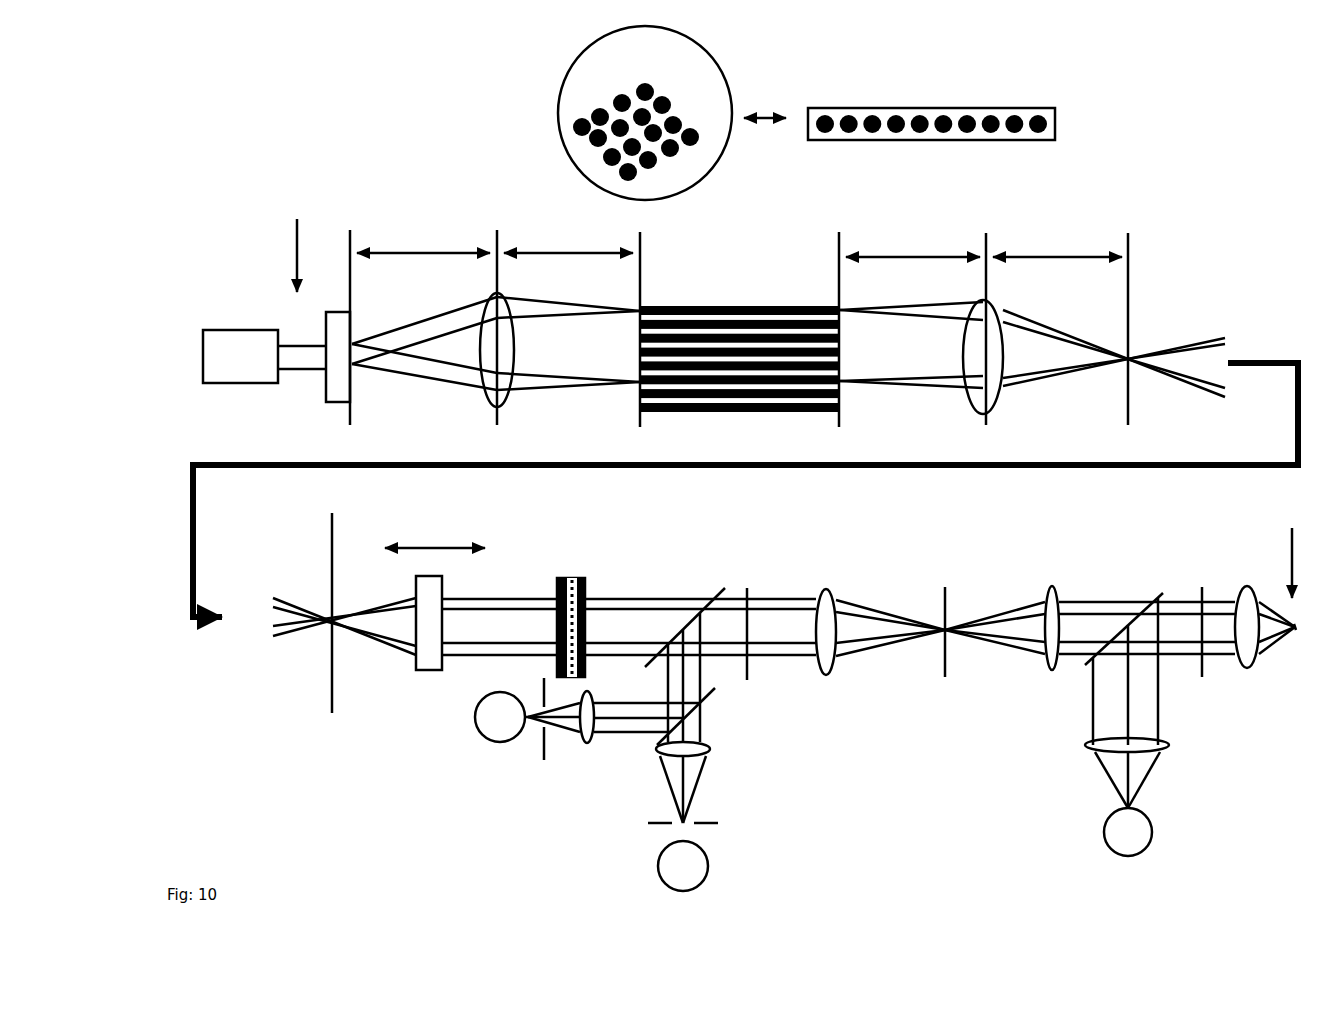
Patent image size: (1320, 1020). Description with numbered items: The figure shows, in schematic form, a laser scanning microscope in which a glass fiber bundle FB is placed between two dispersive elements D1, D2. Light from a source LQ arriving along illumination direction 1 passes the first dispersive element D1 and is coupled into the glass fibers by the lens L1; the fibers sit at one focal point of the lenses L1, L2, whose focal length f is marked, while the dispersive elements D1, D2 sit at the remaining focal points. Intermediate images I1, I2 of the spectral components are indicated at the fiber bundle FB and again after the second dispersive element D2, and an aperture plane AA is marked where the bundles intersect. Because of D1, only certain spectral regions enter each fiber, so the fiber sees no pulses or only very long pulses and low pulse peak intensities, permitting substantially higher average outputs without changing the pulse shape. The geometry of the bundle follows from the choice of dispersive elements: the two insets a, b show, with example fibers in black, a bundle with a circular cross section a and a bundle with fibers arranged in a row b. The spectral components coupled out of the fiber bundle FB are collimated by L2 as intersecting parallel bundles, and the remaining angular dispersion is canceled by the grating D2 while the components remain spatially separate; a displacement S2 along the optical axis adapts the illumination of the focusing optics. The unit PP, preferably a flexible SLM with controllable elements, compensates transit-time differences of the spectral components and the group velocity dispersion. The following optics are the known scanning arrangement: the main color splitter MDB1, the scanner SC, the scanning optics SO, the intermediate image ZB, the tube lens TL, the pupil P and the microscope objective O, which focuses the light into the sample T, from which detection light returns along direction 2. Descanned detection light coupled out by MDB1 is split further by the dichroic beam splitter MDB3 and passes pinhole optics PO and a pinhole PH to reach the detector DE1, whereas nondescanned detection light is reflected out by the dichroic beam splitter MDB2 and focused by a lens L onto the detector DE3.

The fiber bundle with circular cross section a is at (635, 113).
The fiber bundle with fibers arranged in a row b is at (931, 108).
The illumination light direction 1 is at (297, 237).
The detection light direction 2 is at (1294, 544).
The light source LQ is at (264, 376).
The dispersive element D1 is at (328, 336).
The focal length f is at (739, 241).
The lens L1 is at (506, 336).
The lens L2 is at (1000, 342).
The first intermediate image I1 is at (629, 491).
The second intermediate image I2 is at (629, 486).
The glass fiber bundle FB is at (648, 192).
The aperture / intermediate image plane AA is at (749, 473).
The displacement S2 is at (435, 533).
The dispersive element D2 is at (419, 643).
The compensation unit PP is at (571, 614).
The first dichroic beam splitter MDB1 is at (685, 611).
The dichroic beam splitter MDB2 is at (1124, 650).
The dichroic beam splitter MDB3 is at (687, 679).
The scanner SC is at (756, 616).
The scanning optics SO is at (876, 655).
The intermediate image ZB is at (986, 652).
The tube lens TL is at (1139, 651).
The pupil P is at (1203, 652).
The microscope objective O is at (1265, 651).
The sample T is at (1291, 670).
The lens L is at (1147, 773).
The detector DE1 is at (715, 866).
The detector DE3 is at (1118, 853).
The pinhole PH is at (617, 750).
The pinhole optics PO is at (642, 757).